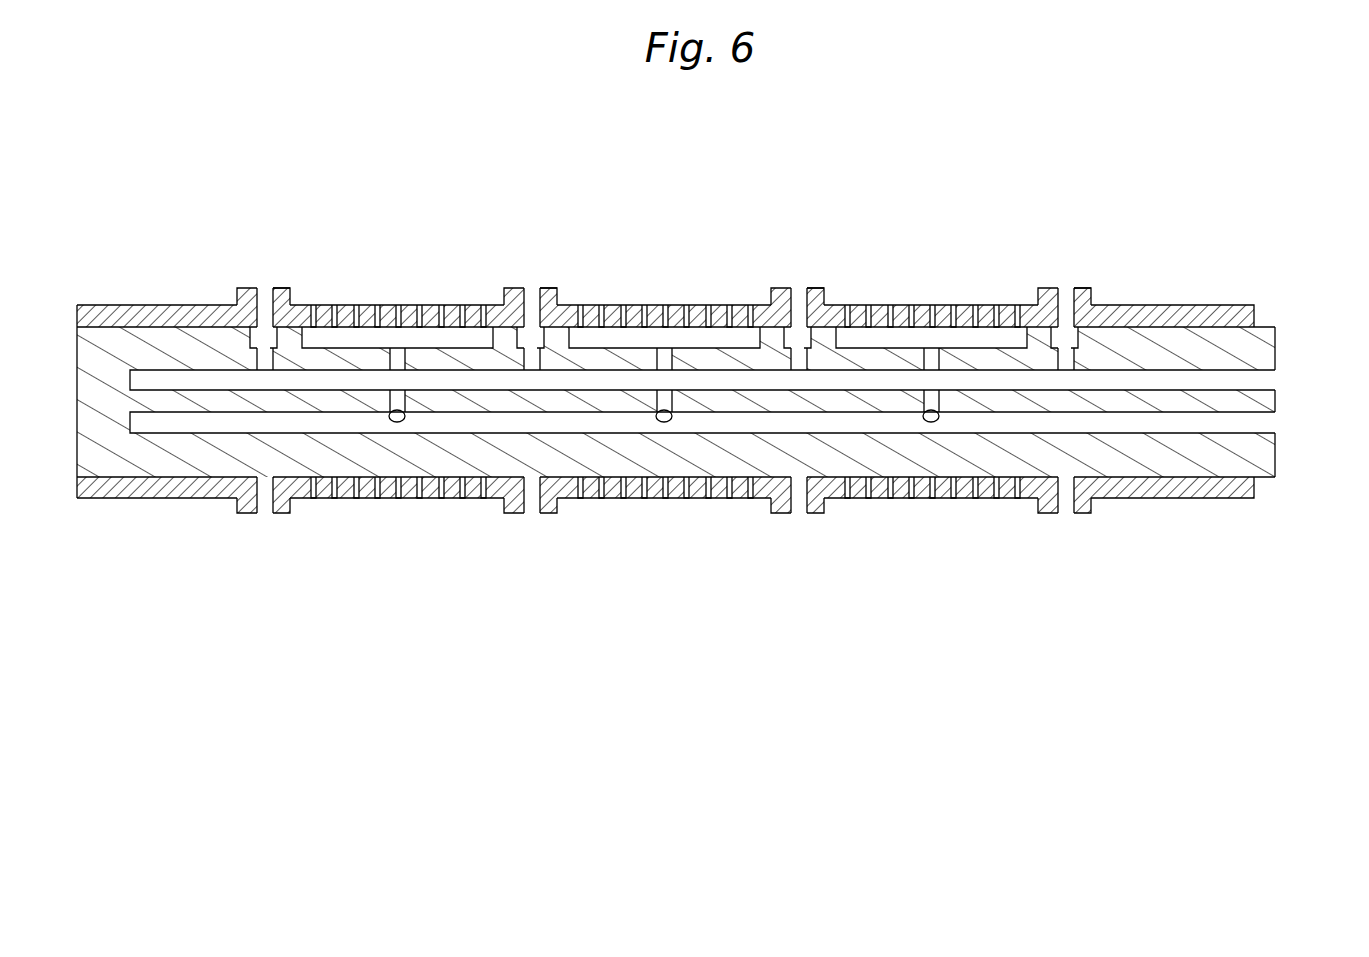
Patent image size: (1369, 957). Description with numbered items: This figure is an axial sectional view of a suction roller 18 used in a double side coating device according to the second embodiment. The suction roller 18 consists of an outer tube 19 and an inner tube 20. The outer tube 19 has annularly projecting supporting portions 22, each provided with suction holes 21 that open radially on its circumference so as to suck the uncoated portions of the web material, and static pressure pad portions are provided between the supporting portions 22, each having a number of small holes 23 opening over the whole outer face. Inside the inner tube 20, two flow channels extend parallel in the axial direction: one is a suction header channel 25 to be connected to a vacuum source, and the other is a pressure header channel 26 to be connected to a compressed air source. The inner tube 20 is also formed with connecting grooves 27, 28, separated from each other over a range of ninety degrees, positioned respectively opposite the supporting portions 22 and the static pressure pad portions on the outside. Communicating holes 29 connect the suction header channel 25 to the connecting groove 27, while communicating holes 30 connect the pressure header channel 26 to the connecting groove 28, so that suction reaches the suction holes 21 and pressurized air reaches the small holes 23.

The suction roller 18 is at (677, 203).
The outer tube 19 is at (1171, 292).
The inner tube 20 is at (1271, 314).
The suction holes 21 is at (266, 296).
The supporting portions 22 is at (283, 277).
The small holes 23 is at (377, 303).
The suction header channel 25 is at (1320, 387).
The pressure header channel 26 is at (1293, 430).
The connecting groove 27 is at (253, 303).
The connecting groove 28 is at (423, 346).
The communicating holes 29 is at (270, 357).
The communicating holes 30 is at (410, 383).